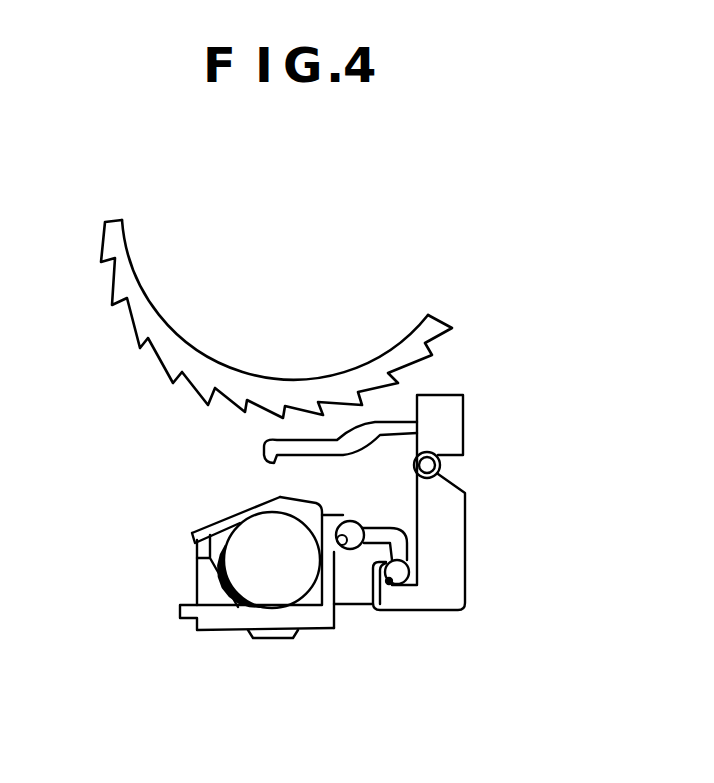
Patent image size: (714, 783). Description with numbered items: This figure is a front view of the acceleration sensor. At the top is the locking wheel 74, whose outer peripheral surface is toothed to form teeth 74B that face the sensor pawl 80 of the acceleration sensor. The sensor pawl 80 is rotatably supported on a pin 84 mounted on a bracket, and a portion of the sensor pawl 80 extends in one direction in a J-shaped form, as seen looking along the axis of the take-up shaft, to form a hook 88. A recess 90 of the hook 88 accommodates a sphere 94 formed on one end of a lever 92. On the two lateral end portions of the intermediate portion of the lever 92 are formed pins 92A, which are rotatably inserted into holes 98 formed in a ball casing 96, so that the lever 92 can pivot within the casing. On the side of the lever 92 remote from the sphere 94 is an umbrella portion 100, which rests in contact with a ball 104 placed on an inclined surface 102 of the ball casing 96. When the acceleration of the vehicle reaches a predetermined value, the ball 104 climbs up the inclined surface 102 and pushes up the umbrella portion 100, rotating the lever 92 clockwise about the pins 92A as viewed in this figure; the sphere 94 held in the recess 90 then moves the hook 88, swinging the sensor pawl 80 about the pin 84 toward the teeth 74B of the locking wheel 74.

The locking wheel 74 is at (110, 289).
The teeth 74B is at (137, 335).
The sensor pawl 80 is at (268, 460).
The pin 84 is at (442, 469).
The hook 88 is at (445, 593).
The recess 90 is at (390, 585).
The lever 92 is at (193, 526).
The pins 92A is at (348, 521).
The sphere 94 is at (377, 567).
The ball casing 96 is at (200, 632).
The holes 98 is at (313, 557).
The umbrella portion 100 is at (227, 513).
The inclined surface 102 is at (267, 640).
The ball 104 is at (198, 569).